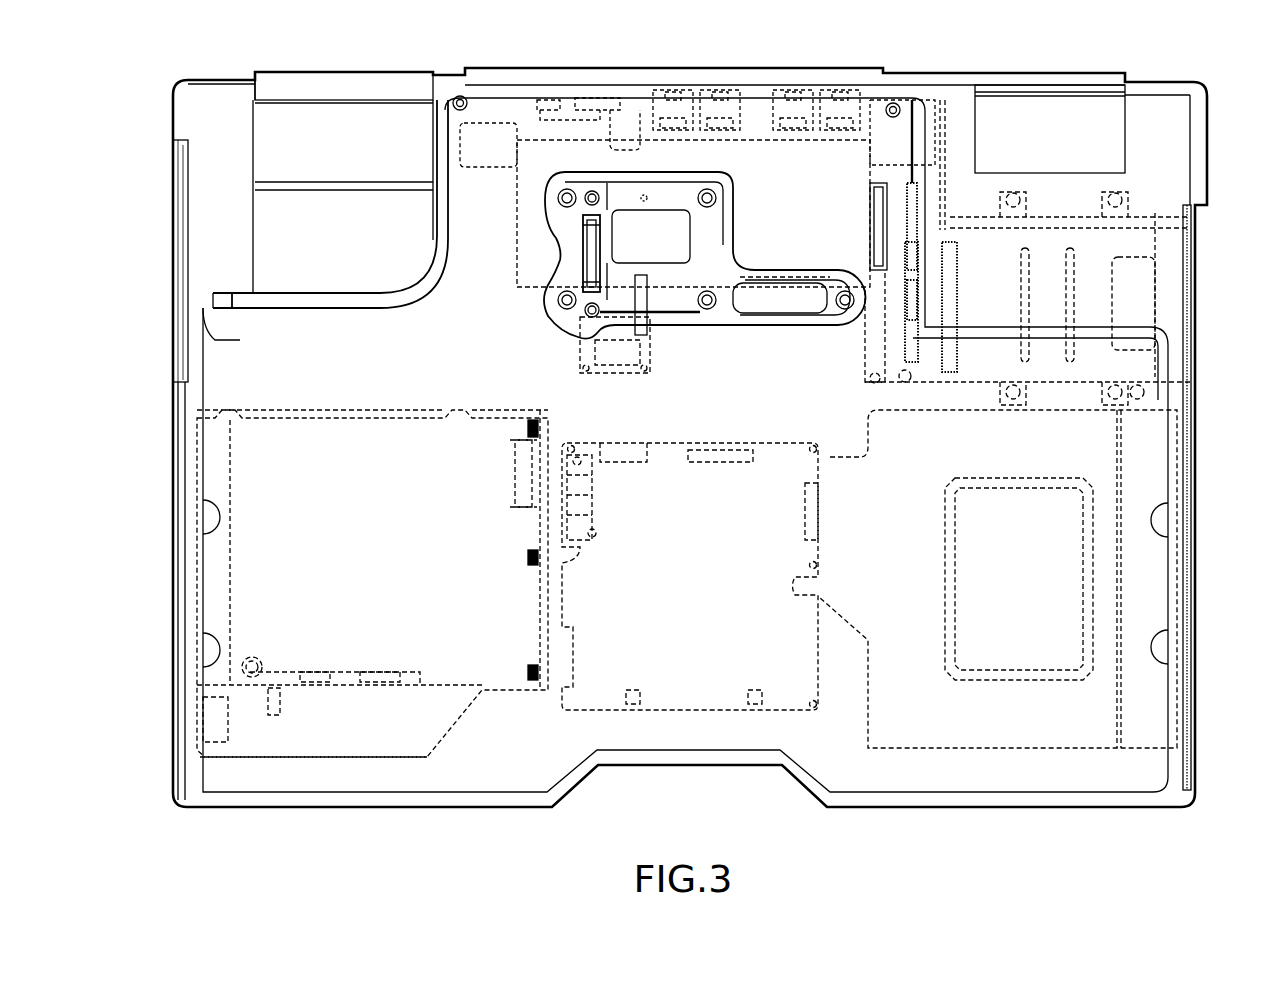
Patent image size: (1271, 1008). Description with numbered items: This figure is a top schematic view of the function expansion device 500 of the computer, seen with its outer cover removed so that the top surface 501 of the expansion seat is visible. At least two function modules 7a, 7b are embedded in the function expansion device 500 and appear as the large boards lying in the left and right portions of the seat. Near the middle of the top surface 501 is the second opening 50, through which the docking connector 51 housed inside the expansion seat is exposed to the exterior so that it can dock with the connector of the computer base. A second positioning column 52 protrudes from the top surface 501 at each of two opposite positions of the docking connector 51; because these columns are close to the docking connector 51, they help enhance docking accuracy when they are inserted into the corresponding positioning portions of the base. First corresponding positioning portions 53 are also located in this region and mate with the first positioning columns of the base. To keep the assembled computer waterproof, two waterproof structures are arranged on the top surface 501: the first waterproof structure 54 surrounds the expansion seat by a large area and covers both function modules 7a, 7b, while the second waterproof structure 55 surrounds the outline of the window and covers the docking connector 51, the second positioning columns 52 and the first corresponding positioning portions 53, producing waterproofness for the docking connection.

The function expansion device 500 is at (670, 58).
The first waterproof structure 54 is at (213, 298).
The top surface 501 is at (232, 342).
The function module 7a is at (300, 410).
The function module 7b is at (997, 750).
The second opening 50 is at (672, 275).
The docking connector 51 is at (585, 250).
The second positioning column 52 is at (568, 322).
The first corresponding positioning portion 53 is at (567, 300).
The second waterproof structure 55 is at (752, 320).